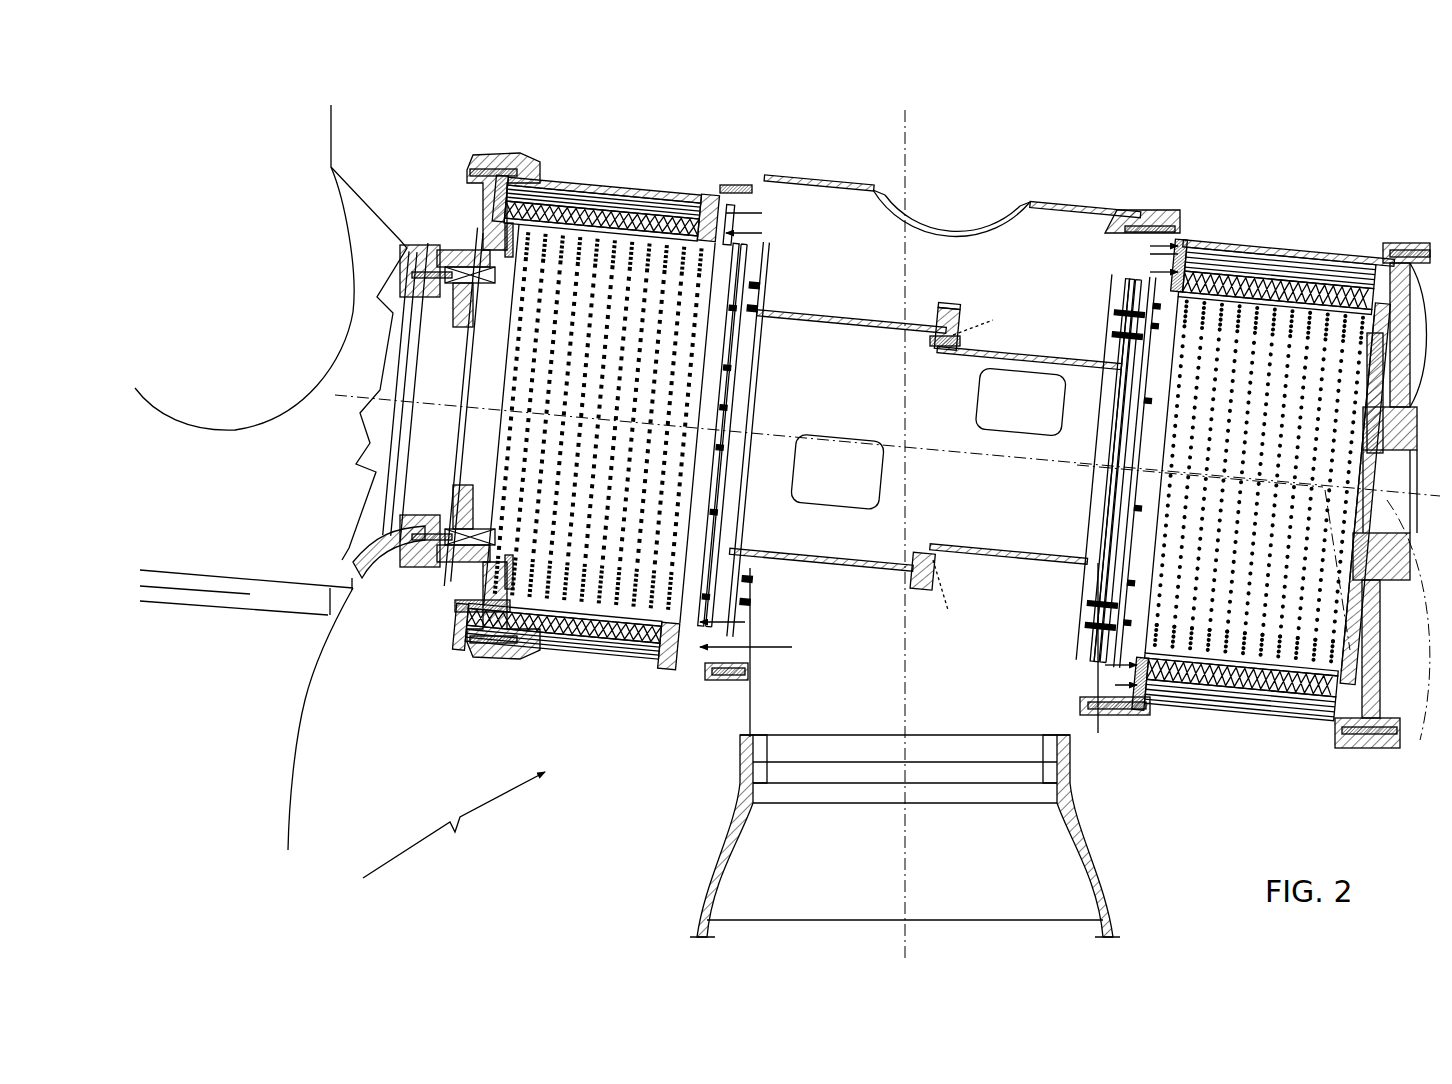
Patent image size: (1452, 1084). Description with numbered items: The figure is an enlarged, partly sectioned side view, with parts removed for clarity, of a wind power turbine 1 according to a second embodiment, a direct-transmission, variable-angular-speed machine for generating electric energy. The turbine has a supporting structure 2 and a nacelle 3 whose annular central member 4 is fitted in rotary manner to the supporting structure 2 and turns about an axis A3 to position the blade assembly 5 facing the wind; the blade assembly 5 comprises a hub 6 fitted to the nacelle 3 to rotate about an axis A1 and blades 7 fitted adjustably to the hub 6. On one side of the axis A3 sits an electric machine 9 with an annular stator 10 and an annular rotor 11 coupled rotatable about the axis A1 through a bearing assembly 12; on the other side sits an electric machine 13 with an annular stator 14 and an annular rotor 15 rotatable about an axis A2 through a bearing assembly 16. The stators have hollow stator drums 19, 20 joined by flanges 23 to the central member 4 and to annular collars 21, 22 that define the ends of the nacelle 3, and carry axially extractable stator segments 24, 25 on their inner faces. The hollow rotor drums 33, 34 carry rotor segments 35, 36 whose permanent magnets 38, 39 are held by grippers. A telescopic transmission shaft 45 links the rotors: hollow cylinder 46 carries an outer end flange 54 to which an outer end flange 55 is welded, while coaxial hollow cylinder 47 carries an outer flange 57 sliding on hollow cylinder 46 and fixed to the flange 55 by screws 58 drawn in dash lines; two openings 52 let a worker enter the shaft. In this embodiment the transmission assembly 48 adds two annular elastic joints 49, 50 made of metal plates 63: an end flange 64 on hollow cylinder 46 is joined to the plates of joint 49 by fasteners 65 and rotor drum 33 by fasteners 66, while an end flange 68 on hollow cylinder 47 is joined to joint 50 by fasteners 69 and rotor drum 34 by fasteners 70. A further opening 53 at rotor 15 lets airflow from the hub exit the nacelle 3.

The wind power turbine 1 is at (444, 838).
The supporting structure 2 is at (1085, 852).
The nacelle 3 is at (1190, 157).
The annular central member 4 is at (1040, 202).
The blade assembly 5 is at (370, 695).
The hub 6 is at (366, 580).
The blades 7 is at (331, 122).
The electric machine 9 is at (665, 165).
The annular stator 10 is at (672, 183).
The annular rotor 11 is at (738, 388).
The bearing assembly 12 is at (470, 237).
The electric machine 13 is at (1296, 204).
The annular stator 14 is at (1330, 234).
The annular rotor 15 is at (1187, 510).
The bearing assembly 16 is at (1390, 450).
The stator drum 19 is at (712, 192).
The stator drum 20 is at (1200, 230).
The annular collar 21 is at (460, 626).
The annular collar 22 is at (1419, 243).
The flanges 23 is at (500, 158).
The axial stator segments 24 is at (762, 213).
The axial stator segments 25 is at (1150, 246).
The rotor drum 33 is at (728, 244).
The rotor drum 34 is at (1150, 272).
The rotor segments 35 is at (762, 233).
The rotor segments 36 is at (1150, 254).
The permanent magnets 38 is at (548, 210).
The permanent magnets 39 is at (1225, 274).
The transmission shaft 45 is at (872, 572).
The hollow cylinder 46 is at (865, 320).
The hollow cylinder 47 is at (1005, 560).
The transmission assembly 48 is at (993, 287).
The annular elastic joint 49 is at (724, 606).
The annular elastic joint 50 is at (1100, 640).
The openings 52 is at (840, 484).
The further opening 53 is at (1382, 497).
The outer end flange 54 is at (945, 312).
The outer end flange 55 is at (950, 306).
The outer flange 57 is at (930, 343).
The screws 58 is at (973, 459).
The metal plates 63 is at (748, 264).
The end flange 64 is at (763, 280).
The fasteners 65 is at (762, 300).
The fasteners 66 is at (735, 316).
The end flange 68 is at (1108, 584).
The fasteners 69 is at (1130, 308).
The fasteners 70 is at (1145, 330).
The axis A1 is at (887, 582).
The axis A2 is at (1200, 476).
The axis A3 is at (915, 172).